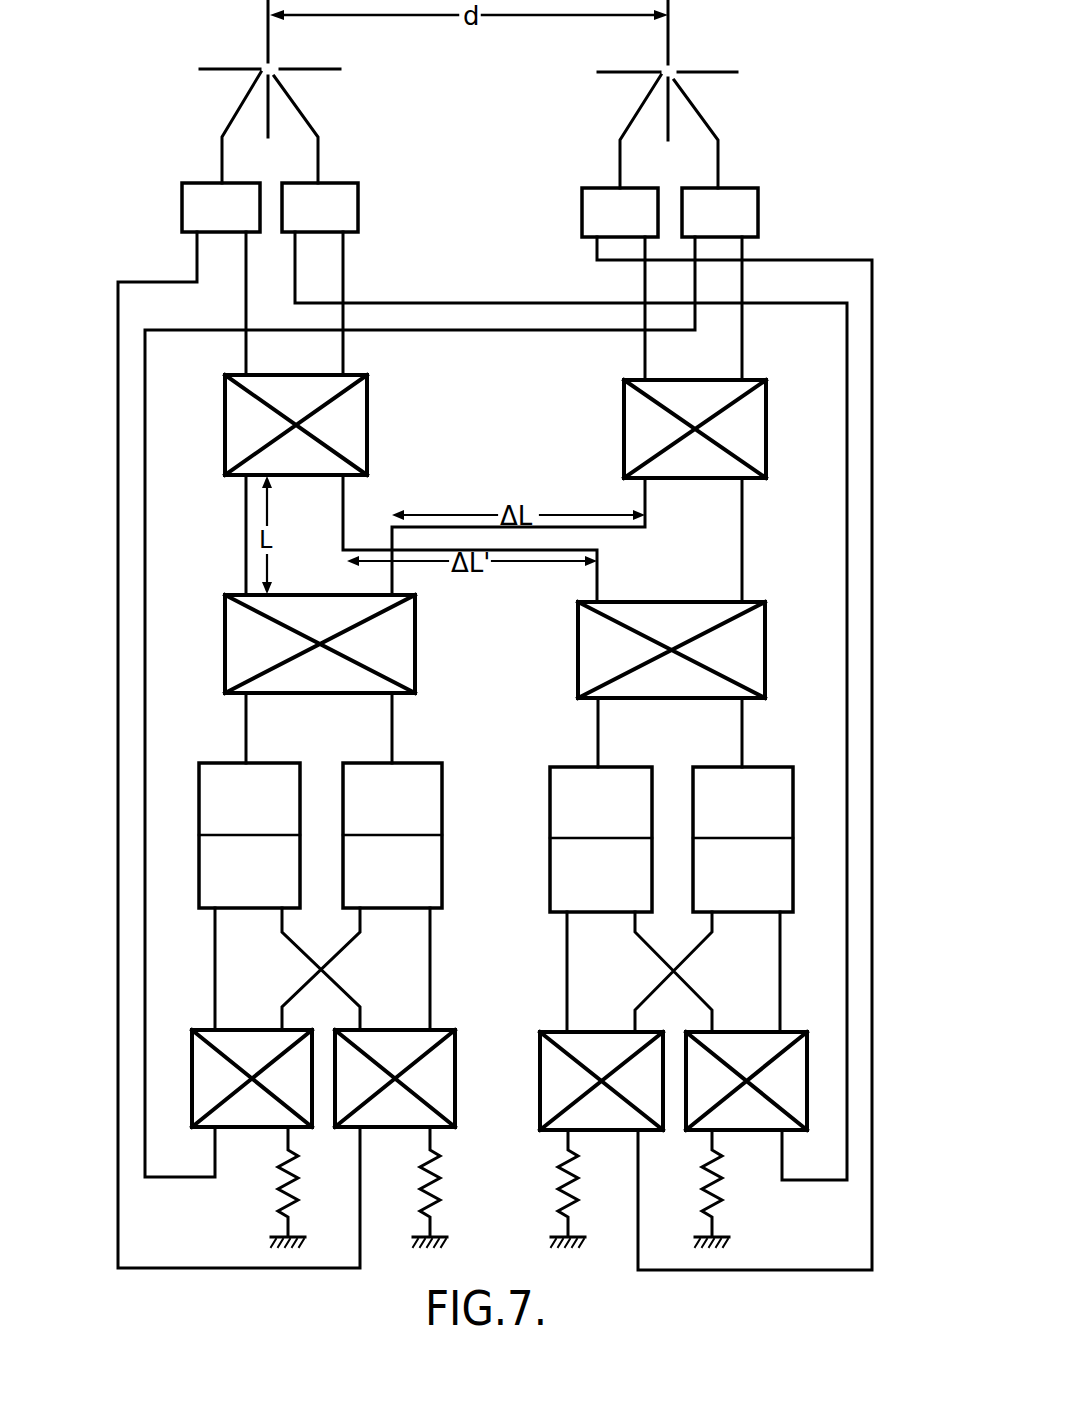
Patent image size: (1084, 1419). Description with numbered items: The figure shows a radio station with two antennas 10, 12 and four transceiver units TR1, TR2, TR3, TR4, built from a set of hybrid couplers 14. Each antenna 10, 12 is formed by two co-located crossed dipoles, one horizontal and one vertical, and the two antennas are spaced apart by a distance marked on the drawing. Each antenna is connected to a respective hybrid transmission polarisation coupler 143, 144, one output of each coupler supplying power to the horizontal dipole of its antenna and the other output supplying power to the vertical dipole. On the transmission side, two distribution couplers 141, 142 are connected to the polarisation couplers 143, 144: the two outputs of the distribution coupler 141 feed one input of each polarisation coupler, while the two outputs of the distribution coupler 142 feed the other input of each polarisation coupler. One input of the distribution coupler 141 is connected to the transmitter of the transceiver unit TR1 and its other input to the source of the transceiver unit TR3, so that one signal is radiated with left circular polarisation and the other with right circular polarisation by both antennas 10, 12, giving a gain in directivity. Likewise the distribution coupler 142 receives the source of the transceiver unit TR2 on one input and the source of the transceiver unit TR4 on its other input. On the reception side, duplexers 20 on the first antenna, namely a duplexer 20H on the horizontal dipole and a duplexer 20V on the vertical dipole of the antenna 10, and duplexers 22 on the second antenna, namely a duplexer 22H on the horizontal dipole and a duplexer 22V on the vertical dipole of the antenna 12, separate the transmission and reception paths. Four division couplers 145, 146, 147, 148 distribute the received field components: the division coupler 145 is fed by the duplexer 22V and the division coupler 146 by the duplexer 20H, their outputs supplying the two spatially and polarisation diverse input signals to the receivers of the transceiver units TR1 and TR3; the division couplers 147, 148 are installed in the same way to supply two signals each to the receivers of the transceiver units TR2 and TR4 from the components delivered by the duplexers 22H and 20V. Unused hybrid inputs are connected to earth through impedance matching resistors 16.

The antenna 10 is at (236, 51).
The antenna 12 is at (690, 53).
The duplexers 20 is at (274, 212).
The duplexer 20H is at (182, 203).
The duplexer 20V is at (358, 212).
The duplexers 22 is at (679, 220).
The duplexer 22H is at (582, 220).
The duplexer 22V is at (758, 222).
The hybrid couplers 14 is at (498, 749).
The hybrid distribution coupler 141 is at (415, 640).
The distribution coupler 142 is at (578, 660).
The hybrid transmission polarisation coupler 143 is at (367, 420).
The hybrid transmission polarisation coupler 144 is at (624, 424).
The division coupler 145 is at (192, 1070).
The division coupler 146 is at (455, 1045).
The division coupler 147 is at (540, 1070).
The division coupler 148 is at (807, 1080).
The impedance matching resistor 16 is at (285, 1190).
The transceiver unit TR1 is at (199, 835).
The transceiver unit TR2 is at (550, 838).
The transceiver unit TR3 is at (442, 835).
The transceiver unit TR4 is at (793, 838).